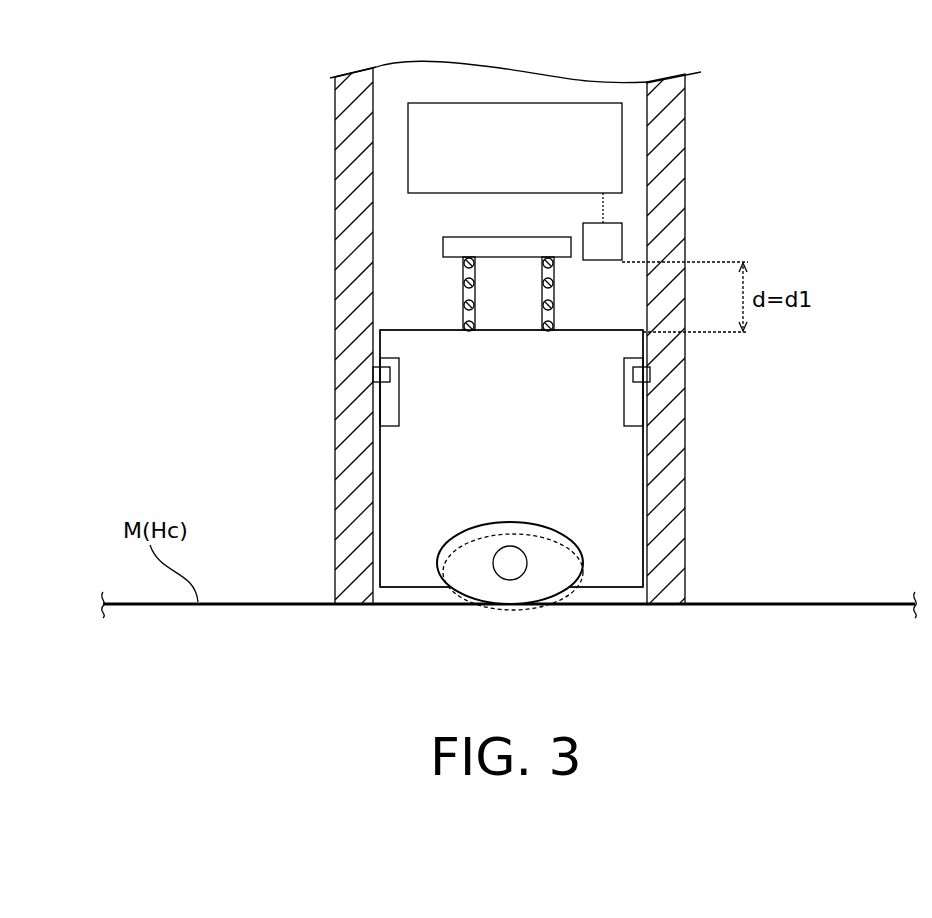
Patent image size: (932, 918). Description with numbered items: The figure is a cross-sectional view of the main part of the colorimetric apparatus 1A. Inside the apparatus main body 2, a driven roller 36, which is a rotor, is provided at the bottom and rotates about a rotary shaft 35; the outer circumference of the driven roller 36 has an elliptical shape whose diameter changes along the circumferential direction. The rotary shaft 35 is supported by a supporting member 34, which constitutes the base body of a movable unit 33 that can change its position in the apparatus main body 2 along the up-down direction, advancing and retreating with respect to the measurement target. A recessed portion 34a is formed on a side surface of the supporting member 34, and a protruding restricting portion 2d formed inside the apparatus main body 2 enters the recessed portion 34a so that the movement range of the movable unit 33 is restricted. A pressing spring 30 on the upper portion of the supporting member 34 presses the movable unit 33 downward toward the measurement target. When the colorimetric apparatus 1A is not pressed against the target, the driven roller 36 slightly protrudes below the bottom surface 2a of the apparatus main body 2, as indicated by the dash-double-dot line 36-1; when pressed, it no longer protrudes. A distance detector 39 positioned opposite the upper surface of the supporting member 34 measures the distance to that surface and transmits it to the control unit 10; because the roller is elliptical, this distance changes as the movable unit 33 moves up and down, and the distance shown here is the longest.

The colorimetric apparatus 1A is at (310, 108).
The apparatus main body 2 is at (690, 190).
The bottom surface 2a is at (357, 608).
The restricting portion 2d is at (373, 373).
The control unit 10 is at (610, 140).
The pressing spring 30 is at (458, 280).
The movable unit 33 is at (402, 326).
The supporting member 34 is at (392, 472).
The recessed portion 34a is at (392, 398).
The rotary shaft 35 is at (527, 557).
The driven roller 36 is at (583, 563).
The driven roller in protruding state 36-1 is at (517, 612).
The distance detector 39 is at (615, 240).